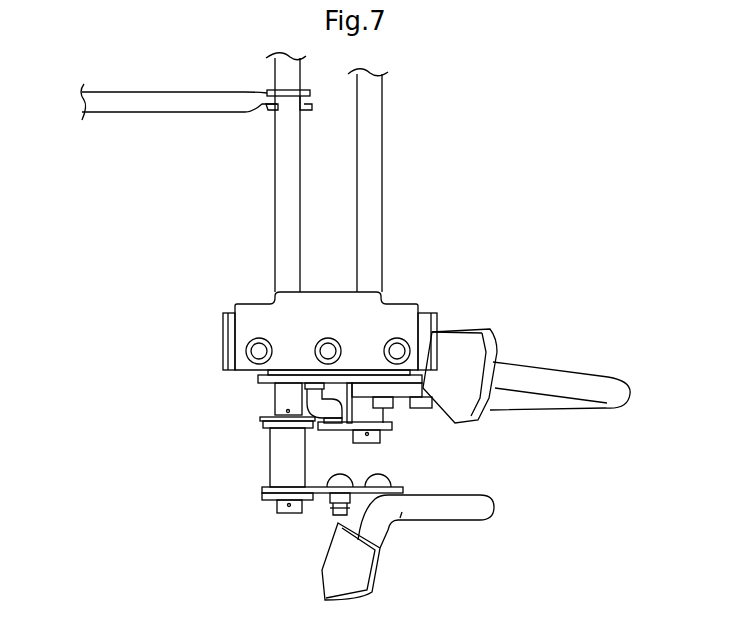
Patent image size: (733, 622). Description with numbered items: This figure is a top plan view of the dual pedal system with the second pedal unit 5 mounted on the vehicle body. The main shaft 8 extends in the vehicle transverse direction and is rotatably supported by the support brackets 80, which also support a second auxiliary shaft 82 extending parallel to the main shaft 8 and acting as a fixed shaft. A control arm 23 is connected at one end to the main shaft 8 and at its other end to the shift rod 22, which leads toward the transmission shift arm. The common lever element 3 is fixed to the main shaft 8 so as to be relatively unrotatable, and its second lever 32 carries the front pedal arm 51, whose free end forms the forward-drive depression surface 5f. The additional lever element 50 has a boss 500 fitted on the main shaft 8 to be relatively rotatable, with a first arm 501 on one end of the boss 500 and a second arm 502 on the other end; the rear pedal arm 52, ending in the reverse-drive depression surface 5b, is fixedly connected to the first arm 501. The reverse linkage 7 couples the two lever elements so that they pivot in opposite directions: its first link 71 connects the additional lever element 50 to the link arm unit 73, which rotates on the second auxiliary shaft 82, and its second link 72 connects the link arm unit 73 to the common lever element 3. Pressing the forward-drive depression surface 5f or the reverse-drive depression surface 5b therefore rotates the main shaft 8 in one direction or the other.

The shift rod 22 is at (138, 103).
The control arm 23 is at (293, 92).
The main shaft 8 is at (287, 176).
The second auxiliary shaft 82 is at (370, 177).
The support brackets 80 is at (230, 343).
The common lever element 3 is at (292, 373).
The reverse linkage 7 is at (295, 403).
The second link 72 is at (322, 395).
The second lever 32 is at (362, 380).
The first link 71 is at (318, 431).
The link arm unit 73 is at (392, 427).
The additional lever element 50 is at (230, 459).
The second arm 502 is at (263, 423).
The boss 500 is at (270, 460).
The first arm 501 is at (353, 488).
The second pedal unit 5 is at (444, 439).
The forward-drive depression surface 5f is at (458, 357).
The front pedal arm 51 is at (550, 380).
The rear pedal arm 52 is at (440, 512).
The reverse-drive depression surface 5b is at (343, 565).